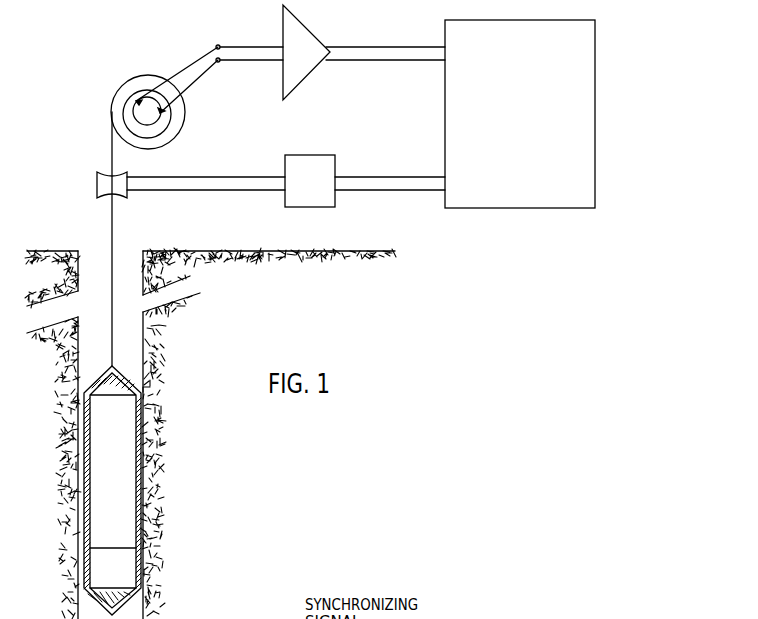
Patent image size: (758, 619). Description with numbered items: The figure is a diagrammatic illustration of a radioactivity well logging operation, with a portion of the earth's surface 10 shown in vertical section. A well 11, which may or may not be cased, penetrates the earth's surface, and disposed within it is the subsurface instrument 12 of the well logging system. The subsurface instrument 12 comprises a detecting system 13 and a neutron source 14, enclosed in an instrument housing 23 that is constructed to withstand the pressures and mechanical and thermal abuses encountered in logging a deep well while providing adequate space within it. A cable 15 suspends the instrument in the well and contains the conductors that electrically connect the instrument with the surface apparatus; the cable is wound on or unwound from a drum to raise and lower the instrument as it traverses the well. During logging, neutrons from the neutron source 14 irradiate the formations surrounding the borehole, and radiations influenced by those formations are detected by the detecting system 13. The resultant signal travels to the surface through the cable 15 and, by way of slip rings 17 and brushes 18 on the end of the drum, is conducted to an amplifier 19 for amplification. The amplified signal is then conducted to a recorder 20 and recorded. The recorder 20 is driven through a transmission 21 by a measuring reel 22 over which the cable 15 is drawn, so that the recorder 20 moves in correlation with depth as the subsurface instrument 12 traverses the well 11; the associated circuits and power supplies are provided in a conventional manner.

The earth's surface 10 is at (46, 327).
The well 11 is at (131, 313).
The subsurface instrument 12 is at (128, 382).
The detecting system 13 is at (130, 449).
The neutron source 14 is at (130, 575).
The cable 15 is at (112, 232).
The slip rings 17 is at (174, 107).
The brushes 18 is at (201, 58).
The amplifier 19 is at (300, 23).
The recorder 20 is at (445, 122).
The transmission 21 is at (285, 162).
The measuring reel 22 is at (107, 172).
The instrument housing 23 is at (133, 598).